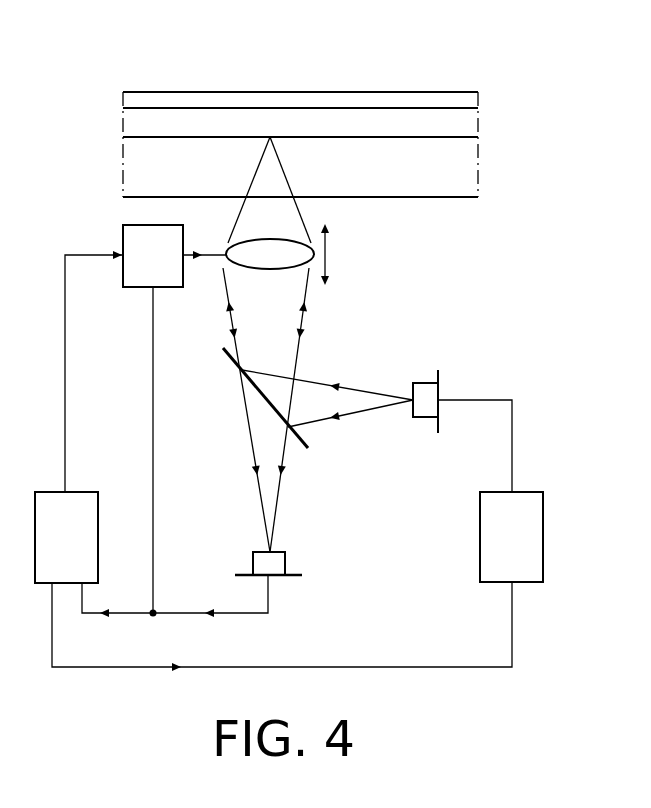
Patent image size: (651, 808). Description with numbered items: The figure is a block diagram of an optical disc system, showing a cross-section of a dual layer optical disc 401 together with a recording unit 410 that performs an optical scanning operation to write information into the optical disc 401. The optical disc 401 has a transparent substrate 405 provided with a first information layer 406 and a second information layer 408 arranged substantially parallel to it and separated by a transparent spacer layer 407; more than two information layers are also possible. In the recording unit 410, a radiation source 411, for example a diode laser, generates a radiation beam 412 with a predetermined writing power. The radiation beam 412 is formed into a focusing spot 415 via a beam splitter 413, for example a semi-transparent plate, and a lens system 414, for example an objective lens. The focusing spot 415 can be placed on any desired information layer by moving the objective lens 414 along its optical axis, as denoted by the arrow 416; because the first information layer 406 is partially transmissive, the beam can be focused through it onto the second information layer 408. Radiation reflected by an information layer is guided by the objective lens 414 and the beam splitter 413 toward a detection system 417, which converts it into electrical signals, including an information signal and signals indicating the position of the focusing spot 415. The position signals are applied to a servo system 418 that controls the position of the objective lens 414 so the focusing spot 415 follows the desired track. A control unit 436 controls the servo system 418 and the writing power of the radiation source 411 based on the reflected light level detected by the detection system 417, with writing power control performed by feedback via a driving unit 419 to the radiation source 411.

The optical disc 401 is at (533, 50).
The transparent substrate 405 is at (132, 168).
The first information layer 406 is at (453, 137).
The transparent spacer layer 407 is at (470, 120).
The second information layer 408 is at (410, 106).
The recording unit 410 is at (470, 302).
The radiation source 411 is at (428, 418).
The radiation beam 412 is at (358, 398).
The beam splitter 413 is at (232, 356).
The lens system 414 is at (275, 270).
The focusing spot 415 is at (270, 137).
The arrow 416 is at (330, 257).
The detection system 417 is at (280, 577).
The servo system 418 is at (173, 268).
The driving unit 419 is at (532, 550).
The control unit 436 is at (86, 550).